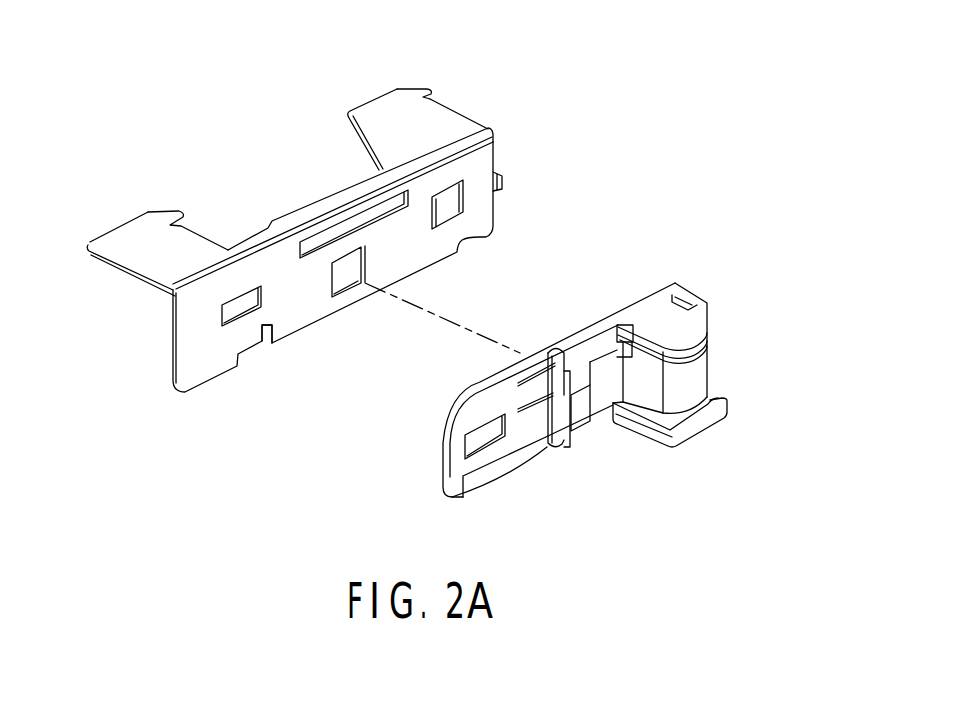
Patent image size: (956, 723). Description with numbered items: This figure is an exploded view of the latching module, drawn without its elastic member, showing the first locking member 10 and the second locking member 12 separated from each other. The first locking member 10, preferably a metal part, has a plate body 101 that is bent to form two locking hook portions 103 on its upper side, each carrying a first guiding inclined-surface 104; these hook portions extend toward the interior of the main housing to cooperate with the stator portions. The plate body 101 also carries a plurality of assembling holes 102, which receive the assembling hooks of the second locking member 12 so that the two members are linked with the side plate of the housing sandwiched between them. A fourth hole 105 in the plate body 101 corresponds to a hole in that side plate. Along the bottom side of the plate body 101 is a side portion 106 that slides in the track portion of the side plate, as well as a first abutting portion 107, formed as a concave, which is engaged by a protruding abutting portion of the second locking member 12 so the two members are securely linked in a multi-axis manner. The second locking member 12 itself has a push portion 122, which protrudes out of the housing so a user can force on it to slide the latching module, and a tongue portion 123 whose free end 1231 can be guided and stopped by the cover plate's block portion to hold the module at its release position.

The first locking member 10 is at (240, 49).
The plate body 101 is at (292, 303).
The assembling holes 102 is at (347, 272).
The locking hook portion 103 is at (138, 233).
The first guiding inclined-surface 104 is at (166, 212).
The fourth hole 105 is at (320, 242).
The side portion 106 is at (365, 291).
The first abutting portion 107 is at (263, 332).
The second locking member 12 is at (652, 175).
The push portion 122 is at (685, 330).
The tongue portion 123 is at (587, 378).
The free end 1231 is at (623, 325).